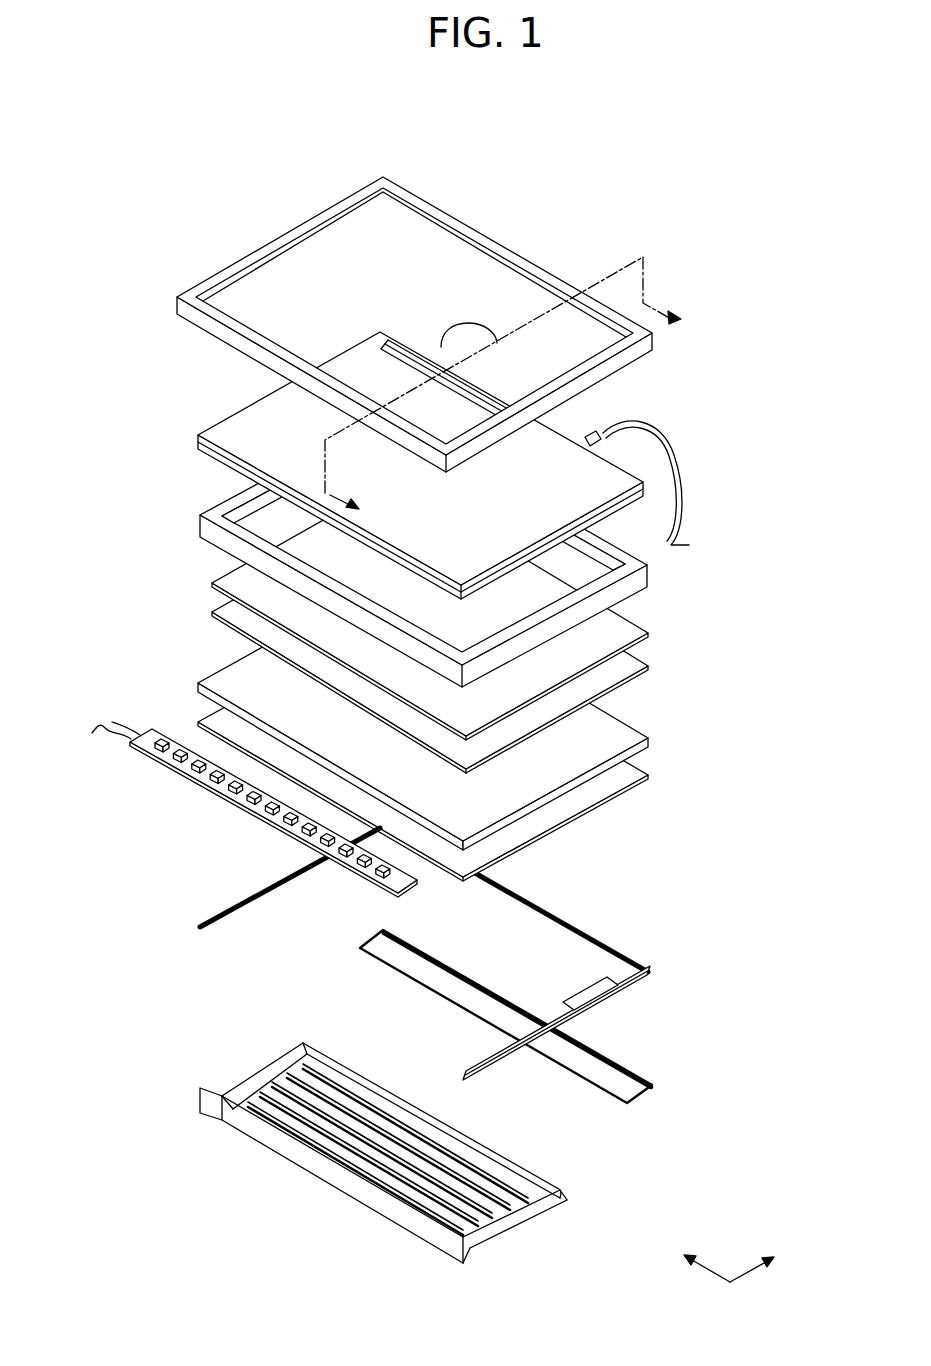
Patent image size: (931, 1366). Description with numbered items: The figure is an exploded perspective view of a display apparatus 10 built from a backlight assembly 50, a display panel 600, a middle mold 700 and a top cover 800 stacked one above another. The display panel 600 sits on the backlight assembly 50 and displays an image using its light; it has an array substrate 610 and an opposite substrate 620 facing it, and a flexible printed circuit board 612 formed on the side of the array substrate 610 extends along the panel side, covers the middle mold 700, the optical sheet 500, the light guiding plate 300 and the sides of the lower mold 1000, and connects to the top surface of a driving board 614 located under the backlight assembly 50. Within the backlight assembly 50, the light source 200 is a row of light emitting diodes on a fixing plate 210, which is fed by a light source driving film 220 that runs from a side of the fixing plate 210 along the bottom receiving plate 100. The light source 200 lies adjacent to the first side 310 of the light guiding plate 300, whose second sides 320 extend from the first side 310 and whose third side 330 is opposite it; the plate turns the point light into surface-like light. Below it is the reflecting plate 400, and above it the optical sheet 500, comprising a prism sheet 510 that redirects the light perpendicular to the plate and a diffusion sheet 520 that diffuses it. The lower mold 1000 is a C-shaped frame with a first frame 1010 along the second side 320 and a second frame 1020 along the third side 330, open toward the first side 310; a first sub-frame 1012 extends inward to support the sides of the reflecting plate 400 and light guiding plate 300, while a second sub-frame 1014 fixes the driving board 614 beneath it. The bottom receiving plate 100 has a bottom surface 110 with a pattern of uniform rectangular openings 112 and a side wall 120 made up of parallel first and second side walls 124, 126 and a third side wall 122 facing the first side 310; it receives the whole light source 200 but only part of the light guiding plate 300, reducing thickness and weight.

The display apparatus 10 is at (459, 728).
The backlight assembly 50 is at (459, 874).
The bottom receiving plate 100 is at (489, 1155).
The bottom surface 110 is at (450, 1135).
The openings 112 is at (488, 1168).
The side wall 120 is at (381, 1155).
The third side wall 122 is at (313, 1163).
The first side wall 124 is at (254, 1075).
The second side wall 126 is at (486, 1245).
The light source 200 is at (428, 824).
The fixing plate 210 is at (238, 802).
The light source driving film 220 is at (108, 722).
The light guiding plate 300 is at (439, 754).
The first side 310 is at (445, 832).
The second sides 320 is at (235, 660).
The third side 330 is at (628, 724).
The reflecting plate 400 is at (648, 776).
The optical sheet 500 is at (491, 626).
The prism sheet 510 is at (648, 666).
The diffusion sheet 520 is at (648, 632).
The display panel 600 is at (484, 461).
The array substrate 610 is at (590, 482).
The flexible printed circuit board 612 is at (600, 428).
The driving board 614 is at (382, 956).
The opposite substrate 620 is at (613, 463).
The middle mold 700 is at (648, 566).
The top cover 800 is at (656, 338).
The lower mold 1000 is at (629, 976).
The first frame 1010 is at (650, 971).
The first sub-frame 1012 is at (608, 997).
The second sub-frame 1014 is at (628, 963).
The second frame 1020 is at (640, 958).